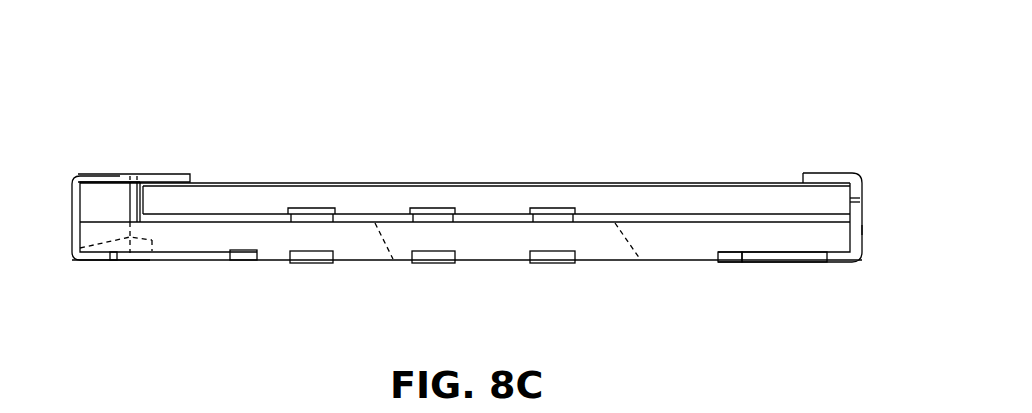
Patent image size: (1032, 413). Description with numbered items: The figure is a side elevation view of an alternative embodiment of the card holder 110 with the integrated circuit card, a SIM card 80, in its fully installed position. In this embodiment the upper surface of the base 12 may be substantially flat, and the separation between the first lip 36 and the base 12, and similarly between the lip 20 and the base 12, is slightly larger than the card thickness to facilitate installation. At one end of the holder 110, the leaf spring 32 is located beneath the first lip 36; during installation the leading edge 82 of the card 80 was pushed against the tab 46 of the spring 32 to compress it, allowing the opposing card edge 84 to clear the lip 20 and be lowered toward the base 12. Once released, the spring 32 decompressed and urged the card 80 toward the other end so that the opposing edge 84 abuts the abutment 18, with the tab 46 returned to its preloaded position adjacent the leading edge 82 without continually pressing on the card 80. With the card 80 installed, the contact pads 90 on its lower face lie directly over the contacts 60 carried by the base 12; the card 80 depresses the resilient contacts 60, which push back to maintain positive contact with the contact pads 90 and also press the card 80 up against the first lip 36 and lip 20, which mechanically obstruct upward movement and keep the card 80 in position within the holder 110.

The holder 110 is at (51, 182).
The leaf spring 32 is at (95, 203).
The first lip 36 is at (163, 174).
The tab 46 is at (133, 203).
The leading edge 82 is at (140, 207).
The contact pads 90 is at (315, 208).
The SIM card 80 is at (722, 196).
The lip 20 is at (828, 173).
The opposing card edge 84 is at (852, 200).
The abutment 18 is at (863, 230).
The base 12 is at (672, 262).
The contacts 60 is at (322, 224).